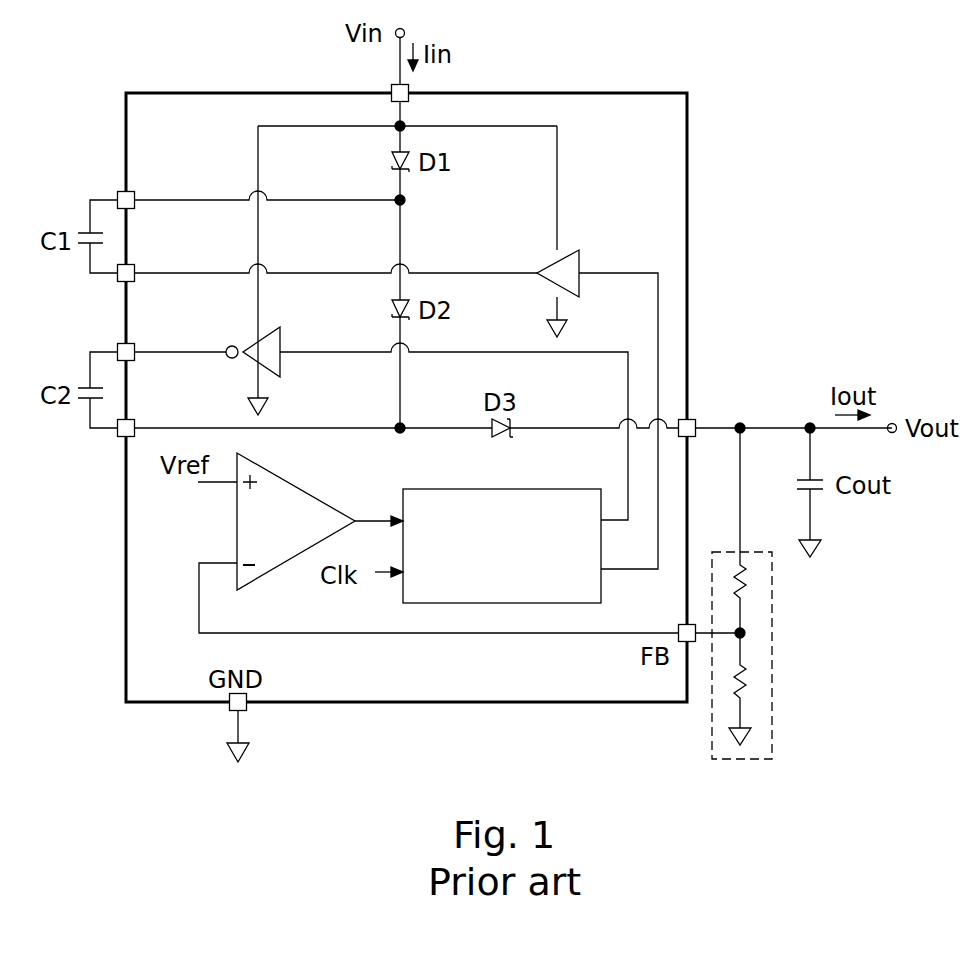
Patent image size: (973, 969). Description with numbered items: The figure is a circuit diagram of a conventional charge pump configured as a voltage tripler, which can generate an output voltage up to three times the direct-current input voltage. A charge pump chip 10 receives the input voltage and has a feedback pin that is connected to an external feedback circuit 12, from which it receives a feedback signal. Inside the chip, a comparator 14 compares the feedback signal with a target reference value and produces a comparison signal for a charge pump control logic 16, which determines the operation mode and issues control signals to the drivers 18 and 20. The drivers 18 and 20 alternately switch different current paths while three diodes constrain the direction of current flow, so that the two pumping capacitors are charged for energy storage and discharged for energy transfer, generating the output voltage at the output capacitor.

The charge pump chip 10 is at (687, 348).
The feedback circuit 12 is at (772, 630).
The comparator 14 is at (297, 483).
The charge pump control logic 16 is at (501, 489).
The driver 18 is at (545, 268).
The driver 20 is at (243, 360).